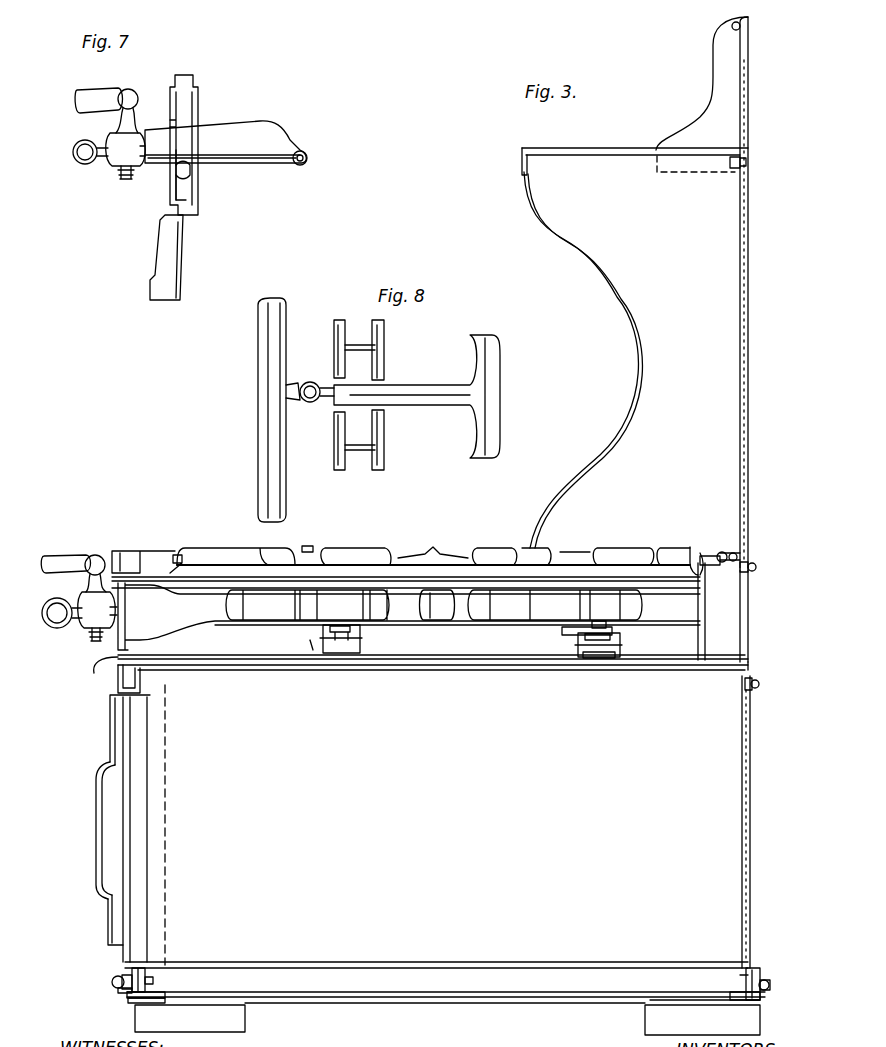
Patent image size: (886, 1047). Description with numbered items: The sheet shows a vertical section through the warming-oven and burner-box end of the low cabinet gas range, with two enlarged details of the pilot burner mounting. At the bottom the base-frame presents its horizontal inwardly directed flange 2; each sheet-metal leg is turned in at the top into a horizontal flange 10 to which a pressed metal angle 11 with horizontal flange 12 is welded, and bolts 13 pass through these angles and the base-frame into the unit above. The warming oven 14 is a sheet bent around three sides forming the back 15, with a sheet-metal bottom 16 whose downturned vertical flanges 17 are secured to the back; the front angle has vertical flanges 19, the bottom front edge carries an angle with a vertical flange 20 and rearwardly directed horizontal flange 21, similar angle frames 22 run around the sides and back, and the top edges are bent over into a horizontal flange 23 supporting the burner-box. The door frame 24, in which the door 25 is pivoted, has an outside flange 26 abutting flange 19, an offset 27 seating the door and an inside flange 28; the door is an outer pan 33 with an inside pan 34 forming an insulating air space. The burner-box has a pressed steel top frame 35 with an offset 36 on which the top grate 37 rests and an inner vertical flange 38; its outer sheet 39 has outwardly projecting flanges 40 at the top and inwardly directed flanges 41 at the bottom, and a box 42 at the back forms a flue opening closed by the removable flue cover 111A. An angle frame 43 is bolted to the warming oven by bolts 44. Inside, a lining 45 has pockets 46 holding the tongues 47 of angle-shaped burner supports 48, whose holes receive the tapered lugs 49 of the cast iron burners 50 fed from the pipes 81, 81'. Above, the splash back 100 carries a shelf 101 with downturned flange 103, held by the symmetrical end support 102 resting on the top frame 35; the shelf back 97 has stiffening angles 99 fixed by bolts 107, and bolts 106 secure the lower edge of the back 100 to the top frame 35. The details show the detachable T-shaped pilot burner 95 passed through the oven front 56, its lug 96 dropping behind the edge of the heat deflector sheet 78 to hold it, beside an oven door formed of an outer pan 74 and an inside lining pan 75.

In FIG. 3, the horizontal inwardly directed flange 2 is at (160, 1008).
In FIG. 3, the horizontal flange 10 is at (238, 1012).
In FIG. 3, the pressed metal angle 11 is at (760, 996).
In FIG. 3, the horizontal flange 12 is at (738, 1003).
In FIG. 3, the bolts 13 is at (112, 978).
In FIG. 3, the warming oven 14 is at (350, 825).
In FIG. 3, the back 15 is at (742, 795).
In FIG. 3, the bottom 16 is at (445, 962).
In FIG. 3, the vertical flanges 17 is at (738, 978).
In FIG. 3, the vertical flanges 19 is at (145, 968).
In FIG. 3, the vertical flange 20 is at (155, 980).
In FIG. 3, the horizontal flange 21 is at (158, 990).
In FIG. 3, the angle frames 22 is at (755, 970).
In FIG. 3, the horizontal flange 23 is at (740, 680).
In FIG. 3, the door frame 24 is at (118, 990).
In FIG. 3, the door 25 is at (102, 815).
In FIG. 3, the outside horizontal flange 26 is at (130, 1003).
In FIG. 3, the offset 27 is at (140, 690).
In FIG. 3, the inside flange 28 is at (150, 715).
In FIG. 3, the formed pan 33 is at (109, 740).
In FIG. 3, the inside pan 34 is at (130, 758).
In FIG. 3, the top frame 35 is at (140, 553).
In FIG. 3, the offset 36 is at (175, 582).
In FIG. 3, the top grate 37 is at (225, 545).
In FIG. 3, the vertical flange 38 is at (184, 566).
In FIG. 3, the outer sheet 39 is at (698, 620).
In FIG. 3, the outwardly projecting flanges 40 is at (708, 565).
In FIG. 3, the inwardly directed flanges 41 is at (690, 668).
In FIG. 3, the sheet-metal box 42 is at (748, 612).
In FIG. 3, the angle frame 43 is at (160, 650).
In FIG. 3, the bolts 44 is at (760, 684).
In FIG. 3, the lining 45 is at (313, 650).
In FIG. 3, the pockets 46 is at (362, 645).
In FIG. 3, the tongues 47 is at (600, 660).
In FIG. 3, the burner supports 48 is at (575, 640).
In FIG. 3, the tapered lugs 49 is at (606, 630).
In FIG. 3, the burners 50 is at (447, 620).
In FIG. 7, the oven front 56 is at (172, 175).
In FIG. 8, the oven front 56 is at (344, 365).
In FIG. 7, the sheet-metal pan 74 is at (152, 255).
In FIG. 7, the inside pan 75 is at (182, 252).
In FIG. 7, the sheet of metal 78 is at (200, 200).
In FIG. 8, the sheet of metal 78 is at (385, 365).
In FIG. 7, the pipe 81 is at (105, 144).
In FIG. 8, the pipe 81 is at (258, 410).
In FIG. 3, the pipe 81' is at (78, 609).
In FIG. 7, the pilot burner 95 is at (265, 130).
In FIG. 8, the pilot burner 95 is at (428, 390).
In FIG. 7, the lug 96 is at (193, 170).
In FIG. 3, the shelf back 97 is at (748, 105).
In FIG. 3, the stiffening angles 99 is at (710, 118).
In FIG. 3, the splash back 100 is at (748, 412).
In FIG. 3, the top shelf portion 101 is at (650, 153).
In FIG. 3, the end support 102 is at (587, 230).
In FIG. 3, the downwardly directed flange 103 is at (520, 168).
In FIG. 3, the bolts 106 is at (755, 572).
In FIG. 3, the bolts 107 is at (752, 165).
In FIG. 3, the flue cover 111A is at (702, 553).